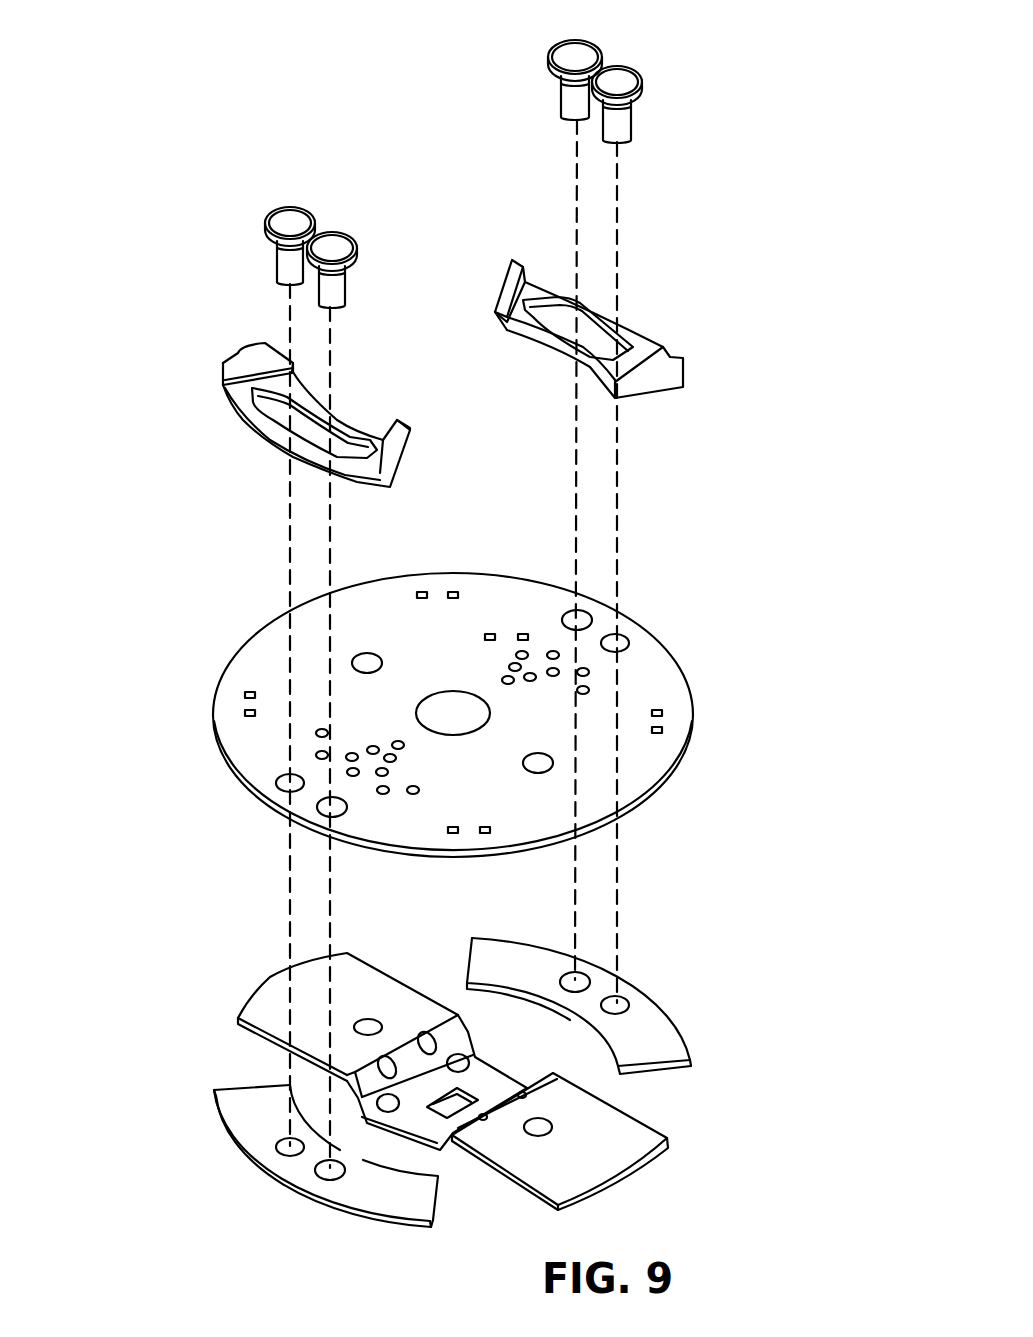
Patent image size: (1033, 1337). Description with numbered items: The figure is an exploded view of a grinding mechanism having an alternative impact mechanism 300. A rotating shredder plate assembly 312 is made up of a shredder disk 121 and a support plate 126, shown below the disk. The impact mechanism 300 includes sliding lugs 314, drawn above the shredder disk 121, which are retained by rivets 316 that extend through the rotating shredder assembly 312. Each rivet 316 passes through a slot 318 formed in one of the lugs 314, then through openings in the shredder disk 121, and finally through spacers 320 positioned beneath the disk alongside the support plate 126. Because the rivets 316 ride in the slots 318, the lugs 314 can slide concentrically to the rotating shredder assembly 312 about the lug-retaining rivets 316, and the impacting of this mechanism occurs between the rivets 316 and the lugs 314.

The impact mechanism 300 is at (232, 465).
The rotating shredder plate assembly 312 is at (190, 945).
The rivets 316 is at (563, 52).
The sliding lugs 314 is at (228, 382).
The slot 318 is at (352, 432).
The shredder disk 121 is at (245, 666).
The support plate 126 is at (268, 1014).
The spacers 320 is at (690, 1034).